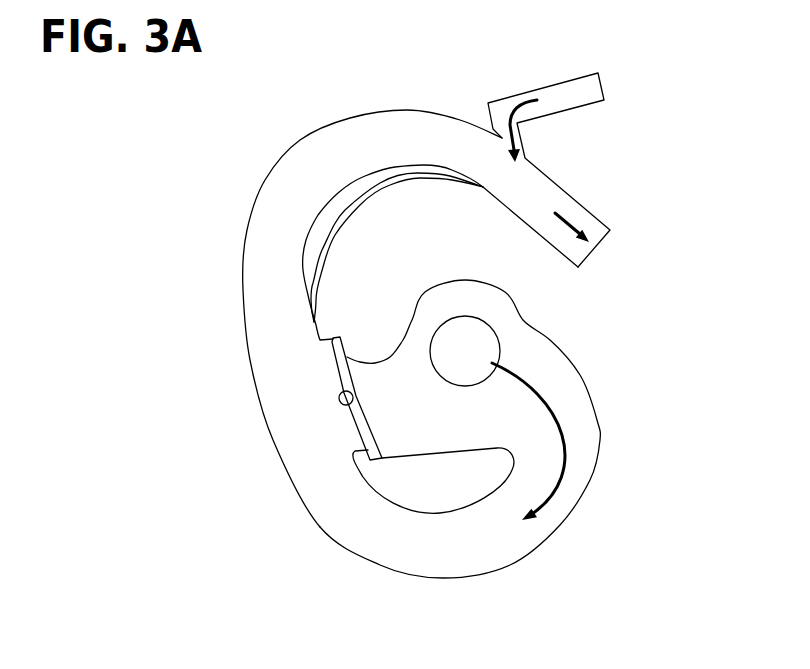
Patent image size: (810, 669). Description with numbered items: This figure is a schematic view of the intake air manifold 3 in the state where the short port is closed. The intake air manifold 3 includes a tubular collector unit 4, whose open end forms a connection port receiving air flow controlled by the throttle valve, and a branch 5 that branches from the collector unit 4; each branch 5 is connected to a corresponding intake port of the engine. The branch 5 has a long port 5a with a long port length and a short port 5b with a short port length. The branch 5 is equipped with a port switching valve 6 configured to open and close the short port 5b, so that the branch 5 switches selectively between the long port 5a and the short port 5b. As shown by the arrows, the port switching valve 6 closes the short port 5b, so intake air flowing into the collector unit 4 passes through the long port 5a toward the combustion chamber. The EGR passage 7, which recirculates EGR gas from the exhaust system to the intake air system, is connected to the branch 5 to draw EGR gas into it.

The intake air manifold 3 is at (277, 120).
The collector unit 4 is at (457, 367).
The branch 5 is at (375, 122).
The long port 5a is at (492, 532).
The short port 5b is at (425, 435).
The port switching valve 6 is at (360, 427).
The EGR passage 7 is at (576, 90).